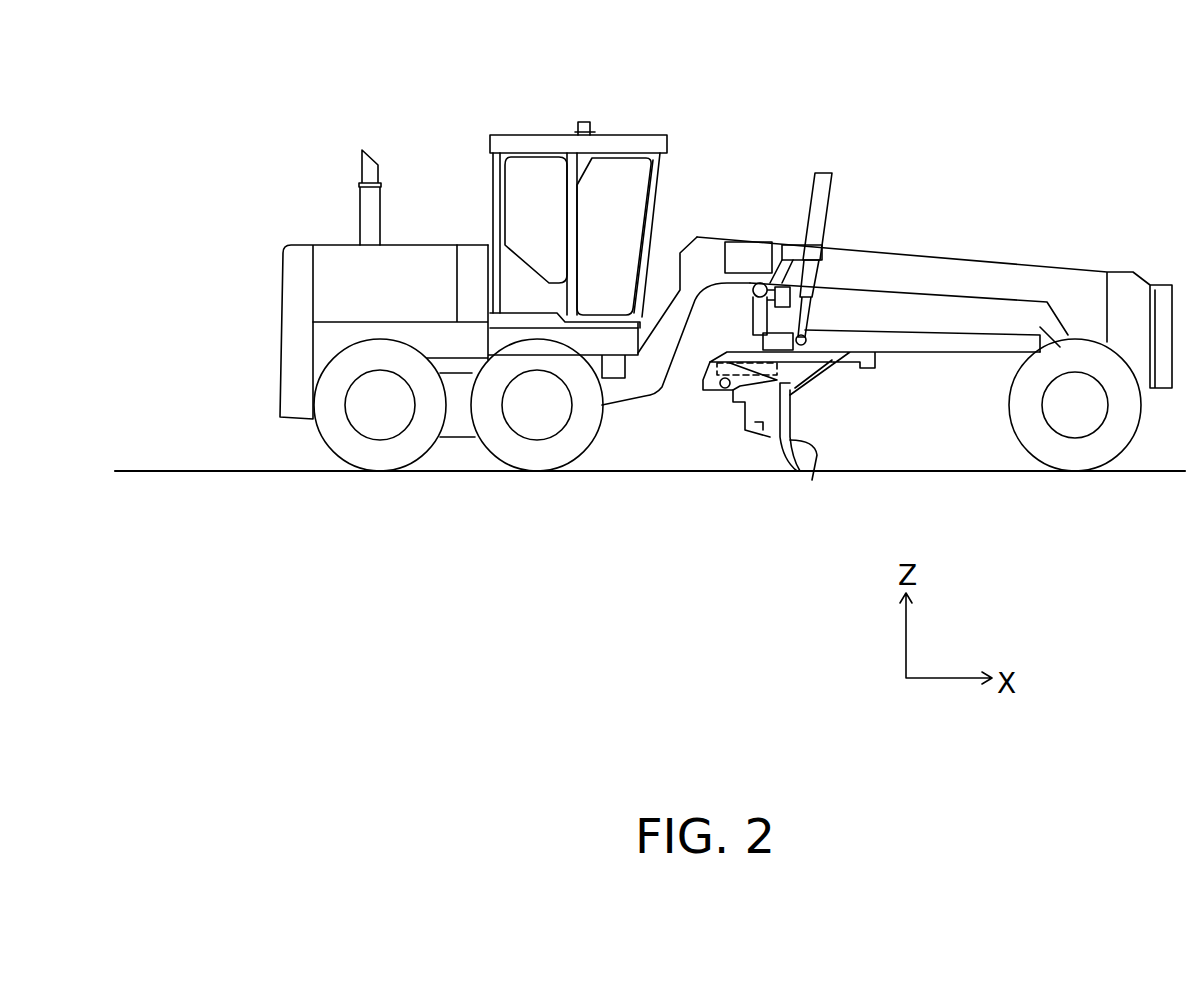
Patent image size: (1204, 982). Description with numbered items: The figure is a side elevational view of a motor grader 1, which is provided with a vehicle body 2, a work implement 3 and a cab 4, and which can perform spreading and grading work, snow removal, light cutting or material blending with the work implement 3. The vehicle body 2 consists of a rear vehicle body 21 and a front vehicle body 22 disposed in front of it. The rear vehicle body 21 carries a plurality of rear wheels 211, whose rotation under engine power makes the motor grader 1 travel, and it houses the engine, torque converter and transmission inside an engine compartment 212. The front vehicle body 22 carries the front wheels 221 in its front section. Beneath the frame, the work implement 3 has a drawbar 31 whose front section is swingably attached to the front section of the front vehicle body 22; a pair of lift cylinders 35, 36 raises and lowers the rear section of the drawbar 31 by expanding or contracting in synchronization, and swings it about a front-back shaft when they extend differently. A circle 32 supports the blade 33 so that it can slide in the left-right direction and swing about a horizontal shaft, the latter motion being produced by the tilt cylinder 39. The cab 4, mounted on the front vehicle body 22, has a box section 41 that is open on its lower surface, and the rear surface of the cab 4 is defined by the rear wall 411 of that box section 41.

The motor grader 1 is at (948, 118).
The vehicle body 2 is at (717, 200).
The rear vehicle body 21 is at (430, 208).
The rear wheels 211 is at (385, 455).
The engine compartment 212 is at (342, 258).
The front vehicle body 22 is at (965, 233).
The front wheels 221 is at (1082, 460).
The work implement 3 is at (860, 452).
The drawbar 31 is at (975, 348).
The circle 32 is at (863, 367).
The blade 33 is at (817, 450).
The lift cylinder 35 is at (818, 193).
The lift cylinder 36 is at (807, 259).
The tilt cylinder 39 is at (743, 403).
The cab 4 is at (567, 118).
The box section 41 is at (627, 135).
The rear wall 411 is at (493, 187).